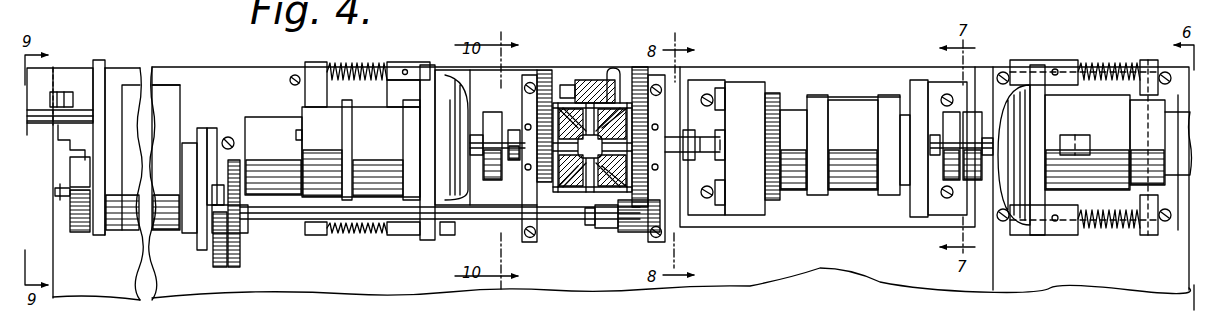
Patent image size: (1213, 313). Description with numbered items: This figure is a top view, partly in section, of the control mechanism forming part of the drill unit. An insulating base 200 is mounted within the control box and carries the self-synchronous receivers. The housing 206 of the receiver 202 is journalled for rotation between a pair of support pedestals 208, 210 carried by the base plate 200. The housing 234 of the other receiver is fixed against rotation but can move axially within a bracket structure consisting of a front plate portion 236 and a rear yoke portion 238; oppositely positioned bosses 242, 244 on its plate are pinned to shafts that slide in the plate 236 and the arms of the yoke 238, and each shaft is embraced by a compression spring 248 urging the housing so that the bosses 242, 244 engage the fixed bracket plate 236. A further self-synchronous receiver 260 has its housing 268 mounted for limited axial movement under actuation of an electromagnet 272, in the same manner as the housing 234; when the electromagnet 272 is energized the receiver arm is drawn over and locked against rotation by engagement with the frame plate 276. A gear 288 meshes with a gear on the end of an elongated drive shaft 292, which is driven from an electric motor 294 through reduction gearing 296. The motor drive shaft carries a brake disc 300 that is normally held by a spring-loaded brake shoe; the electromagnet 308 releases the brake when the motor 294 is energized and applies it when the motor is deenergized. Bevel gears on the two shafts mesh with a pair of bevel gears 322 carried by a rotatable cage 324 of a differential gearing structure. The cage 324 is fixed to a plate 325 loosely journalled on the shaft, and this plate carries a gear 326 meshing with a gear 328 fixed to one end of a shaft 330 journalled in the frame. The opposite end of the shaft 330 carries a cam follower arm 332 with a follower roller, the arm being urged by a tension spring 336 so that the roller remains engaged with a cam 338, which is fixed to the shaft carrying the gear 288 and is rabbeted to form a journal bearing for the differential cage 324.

The insulating base 200 is at (805, 73).
The self-synchronous receiver 202 is at (845, 134).
The housing of the receiver 206 is at (852, 182).
The support pedestal 208 is at (740, 207).
The support pedestal 210 is at (915, 207).
The housing of the receiver 234 is at (1103, 131).
The front plate portion 236 is at (1020, 62).
The rear yoke portion 238 is at (1148, 232).
The boss 242 is at (1060, 60).
The boss 244 is at (1042, 236).
The compression spring 248 is at (1110, 62).
The self-synchronous receiver 260 is at (378, 118).
The housing of the receiver 268 is at (395, 131).
The electromagnet 272 is at (265, 125).
The frame plate 276 is at (440, 233).
The gear 288 is at (650, 193).
The drive shaft 292 is at (272, 220).
The electric motor 294 is at (130, 87).
The reduction gearing 296 is at (240, 262).
The brake disc 300 is at (80, 234).
The electromagnet 308 is at (68, 70).
The bevel gear 322 is at (624, 137).
The rotatable cage 324 is at (603, 195).
The plate 325 is at (552, 192).
The gear 326 is at (553, 172).
The gear 328 is at (538, 72).
The shaft 330 is at (592, 80).
The cam follower arm 332 is at (627, 80).
The tension spring 336 is at (625, 78).
The cam 338 is at (645, 110).